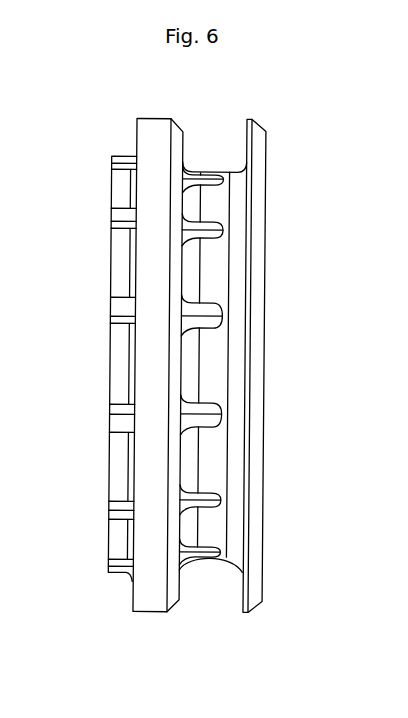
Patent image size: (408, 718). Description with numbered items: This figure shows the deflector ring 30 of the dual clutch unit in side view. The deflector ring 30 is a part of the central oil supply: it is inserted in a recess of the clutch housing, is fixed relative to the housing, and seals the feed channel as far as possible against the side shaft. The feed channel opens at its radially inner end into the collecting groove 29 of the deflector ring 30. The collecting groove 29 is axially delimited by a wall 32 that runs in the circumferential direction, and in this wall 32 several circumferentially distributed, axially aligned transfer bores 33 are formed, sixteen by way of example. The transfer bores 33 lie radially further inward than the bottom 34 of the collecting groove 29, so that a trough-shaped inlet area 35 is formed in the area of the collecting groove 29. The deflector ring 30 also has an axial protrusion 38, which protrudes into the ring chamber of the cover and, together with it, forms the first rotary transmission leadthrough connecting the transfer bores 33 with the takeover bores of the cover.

The collecting groove 29 is at (223, 167).
The deflector ring 30 is at (269, 145).
The wall 32 is at (160, 128).
The transfer bores 33 is at (111, 166).
The bottom 34 is at (205, 557).
The trough-shaped inlet area 35 is at (222, 194).
The axial protrusion 38 is at (125, 157).